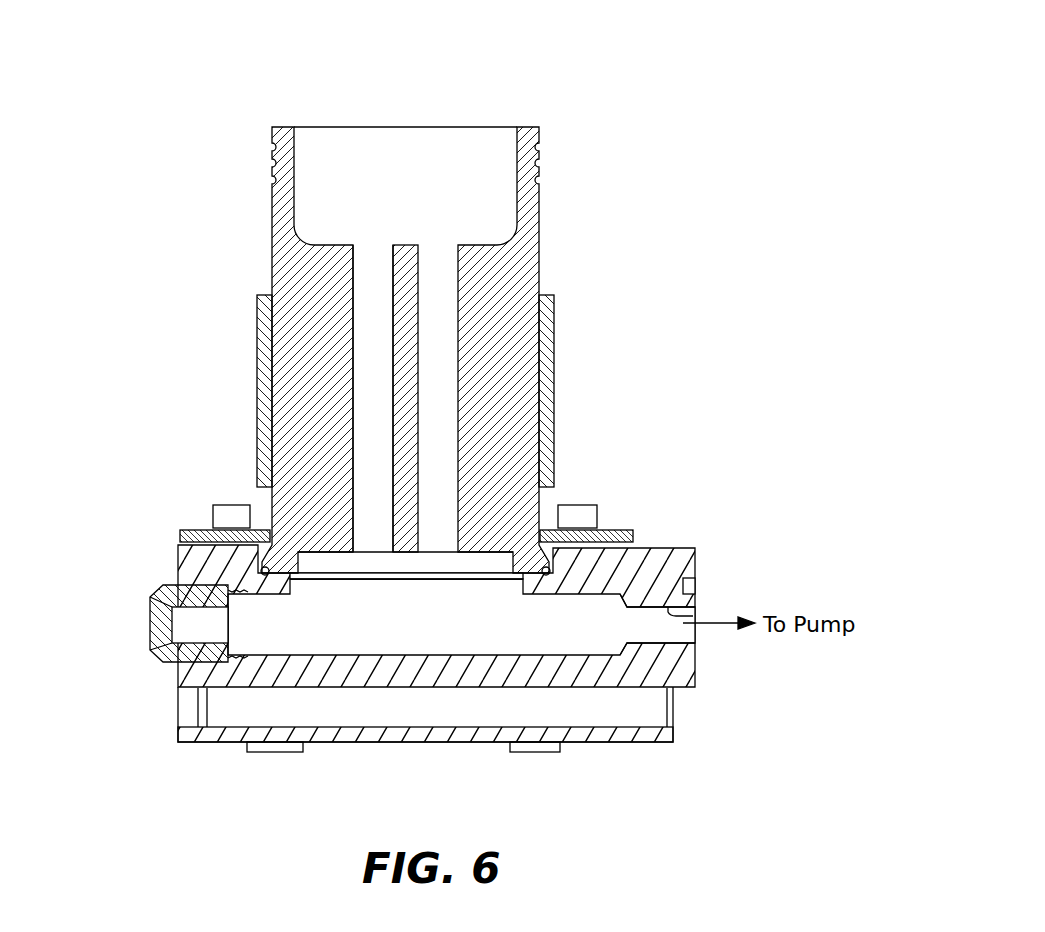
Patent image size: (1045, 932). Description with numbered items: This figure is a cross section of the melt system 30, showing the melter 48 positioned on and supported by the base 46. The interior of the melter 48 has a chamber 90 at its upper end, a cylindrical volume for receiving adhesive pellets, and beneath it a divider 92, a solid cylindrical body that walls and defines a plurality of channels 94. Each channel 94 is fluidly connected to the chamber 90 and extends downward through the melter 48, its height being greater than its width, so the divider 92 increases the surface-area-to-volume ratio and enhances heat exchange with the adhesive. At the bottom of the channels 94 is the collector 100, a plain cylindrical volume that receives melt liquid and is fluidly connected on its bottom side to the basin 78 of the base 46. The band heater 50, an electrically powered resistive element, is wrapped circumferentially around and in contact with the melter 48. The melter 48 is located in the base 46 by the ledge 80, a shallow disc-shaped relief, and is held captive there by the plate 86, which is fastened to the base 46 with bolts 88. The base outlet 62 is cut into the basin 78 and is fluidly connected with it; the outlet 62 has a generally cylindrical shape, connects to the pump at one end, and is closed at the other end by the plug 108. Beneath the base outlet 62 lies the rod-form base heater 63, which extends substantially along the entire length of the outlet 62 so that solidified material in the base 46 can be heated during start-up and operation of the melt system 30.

The melt system 30 is at (668, 107).
The base 46 is at (170, 678).
The melter 48 is at (550, 197).
The band heater 50 is at (557, 330).
The base outlet 62 is at (695, 613).
The base heater 63 is at (190, 703).
The basin 78 is at (530, 578).
The ledge 80 is at (550, 585).
The plate 86 is at (640, 527).
The bolts 88 is at (232, 512).
The chamber 90 is at (517, 168).
The divider 92 is at (407, 245).
The channels 94 is at (355, 340).
The collector 100 is at (508, 556).
The plug 108 is at (150, 593).